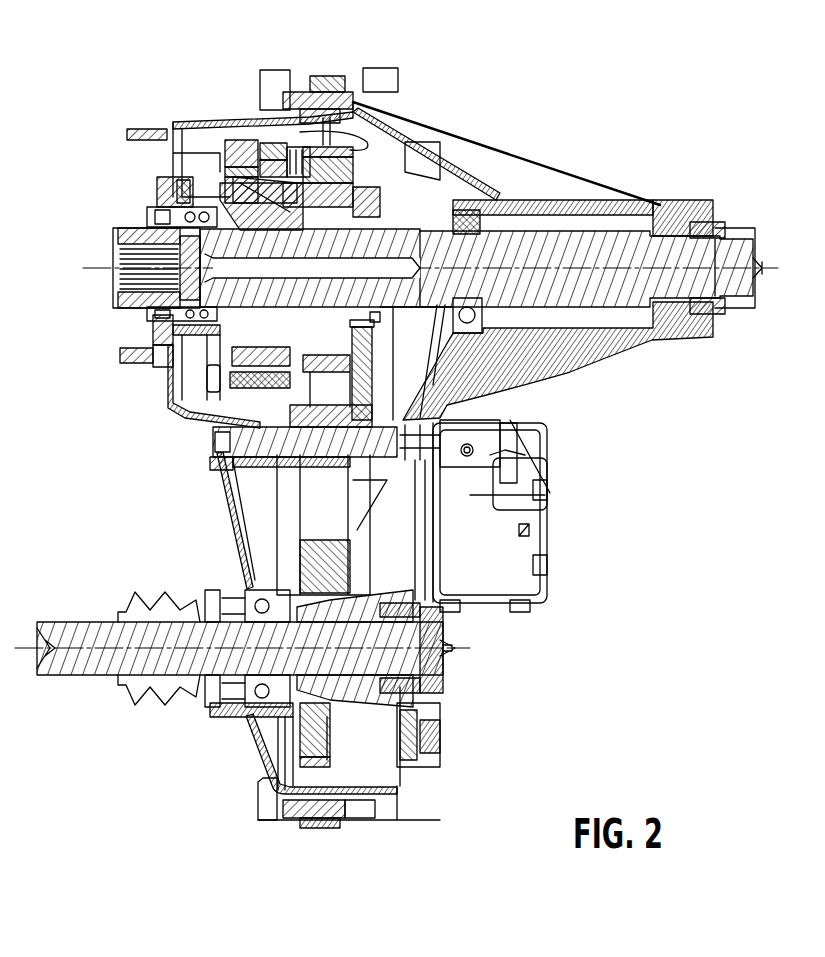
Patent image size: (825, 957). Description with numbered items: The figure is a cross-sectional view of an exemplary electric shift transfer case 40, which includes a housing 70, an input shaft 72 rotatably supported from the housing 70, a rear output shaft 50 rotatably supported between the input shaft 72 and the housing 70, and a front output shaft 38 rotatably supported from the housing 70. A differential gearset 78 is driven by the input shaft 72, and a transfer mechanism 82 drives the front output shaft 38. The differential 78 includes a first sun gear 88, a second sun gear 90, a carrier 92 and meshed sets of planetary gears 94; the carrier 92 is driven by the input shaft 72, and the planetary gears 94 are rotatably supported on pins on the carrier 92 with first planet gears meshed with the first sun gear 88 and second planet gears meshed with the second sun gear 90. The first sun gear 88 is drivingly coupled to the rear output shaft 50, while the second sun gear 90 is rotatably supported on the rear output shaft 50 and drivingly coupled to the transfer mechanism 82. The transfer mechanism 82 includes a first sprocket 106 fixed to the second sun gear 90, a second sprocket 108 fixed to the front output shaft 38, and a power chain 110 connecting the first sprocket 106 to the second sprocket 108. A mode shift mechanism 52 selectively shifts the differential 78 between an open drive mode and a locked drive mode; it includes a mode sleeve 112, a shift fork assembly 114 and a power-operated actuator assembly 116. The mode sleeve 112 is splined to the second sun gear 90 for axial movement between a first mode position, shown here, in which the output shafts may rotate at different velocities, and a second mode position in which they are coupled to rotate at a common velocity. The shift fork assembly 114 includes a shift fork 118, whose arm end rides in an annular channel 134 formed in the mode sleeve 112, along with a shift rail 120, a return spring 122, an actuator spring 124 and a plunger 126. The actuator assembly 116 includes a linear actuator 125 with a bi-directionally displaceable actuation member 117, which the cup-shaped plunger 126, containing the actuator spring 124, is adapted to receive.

The transfer case 40 is at (567, 76).
The front output shaft 38 is at (70, 668).
The rear output shaft 50 is at (720, 257).
The mode shift mechanism 52 is at (385, 477).
The housing 70 is at (633, 337).
The input shaft 72 is at (133, 233).
The differential gearset 78 is at (244, 132).
The transfer mechanism 82 is at (360, 167).
The first sun gear 88 is at (240, 207).
The second sun gear 90 is at (237, 199).
The carrier 92 is at (233, 140).
The planetary gears 94 is at (273, 148).
The first sprocket 106 is at (225, 392).
The second sprocket 108 is at (318, 568).
The power chain 110 is at (313, 510).
The mode sleeve 112 is at (393, 208).
The shift fork assembly 114 is at (376, 360).
The power-operated actuator assembly 116 is at (480, 419).
The actuation member 117 is at (522, 516).
The shift fork 118 is at (360, 408).
The shift rail 120 is at (217, 457).
The return spring 122 is at (217, 428).
The actuator spring 124 is at (458, 480).
The linear actuator 125 is at (547, 500).
The plunger 126 is at (437, 405).
The annular channel 134 is at (360, 190).